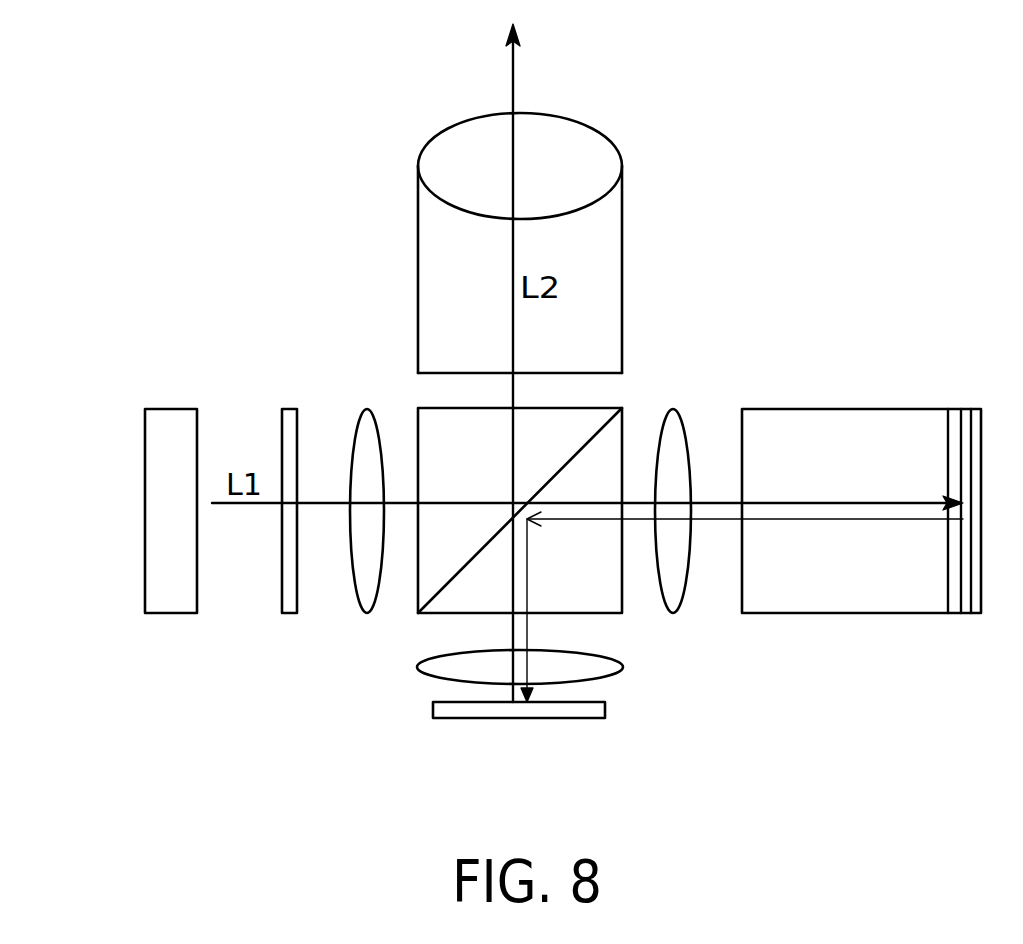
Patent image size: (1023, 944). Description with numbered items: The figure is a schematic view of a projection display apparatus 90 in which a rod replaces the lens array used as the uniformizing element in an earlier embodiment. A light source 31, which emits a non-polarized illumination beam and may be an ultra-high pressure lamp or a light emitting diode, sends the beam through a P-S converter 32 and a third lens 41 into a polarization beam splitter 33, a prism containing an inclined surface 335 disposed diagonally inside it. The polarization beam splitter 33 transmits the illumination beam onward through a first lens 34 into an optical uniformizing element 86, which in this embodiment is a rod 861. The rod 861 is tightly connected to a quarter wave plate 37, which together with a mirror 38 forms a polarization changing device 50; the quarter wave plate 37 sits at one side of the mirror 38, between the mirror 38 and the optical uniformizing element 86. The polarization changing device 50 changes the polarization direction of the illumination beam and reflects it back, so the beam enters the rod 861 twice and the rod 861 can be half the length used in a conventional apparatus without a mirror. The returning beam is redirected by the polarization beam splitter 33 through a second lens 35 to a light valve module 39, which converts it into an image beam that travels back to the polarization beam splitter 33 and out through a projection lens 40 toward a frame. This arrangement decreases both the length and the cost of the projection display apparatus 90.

The projection display apparatus 90 is at (182, 60).
The projection lens 40 is at (570, 116).
The polarization beam splitter 33 is at (558, 530).
The inclined surface 335 is at (607, 420).
The light source 31 is at (170, 615).
The P-S converter 32 is at (290, 615).
The third lens 41 is at (367, 615).
The first lens 34 is at (673, 615).
The rod 861 is at (873, 531).
The optical uniformizing element 86 is at (873, 531).
The quarter wave plate 37 is at (957, 616).
The mirror 38 is at (971, 616).
The polarization changing device 50 is at (963, 589).
The second lens 35 is at (618, 684).
The light valve module 39 is at (518, 721).